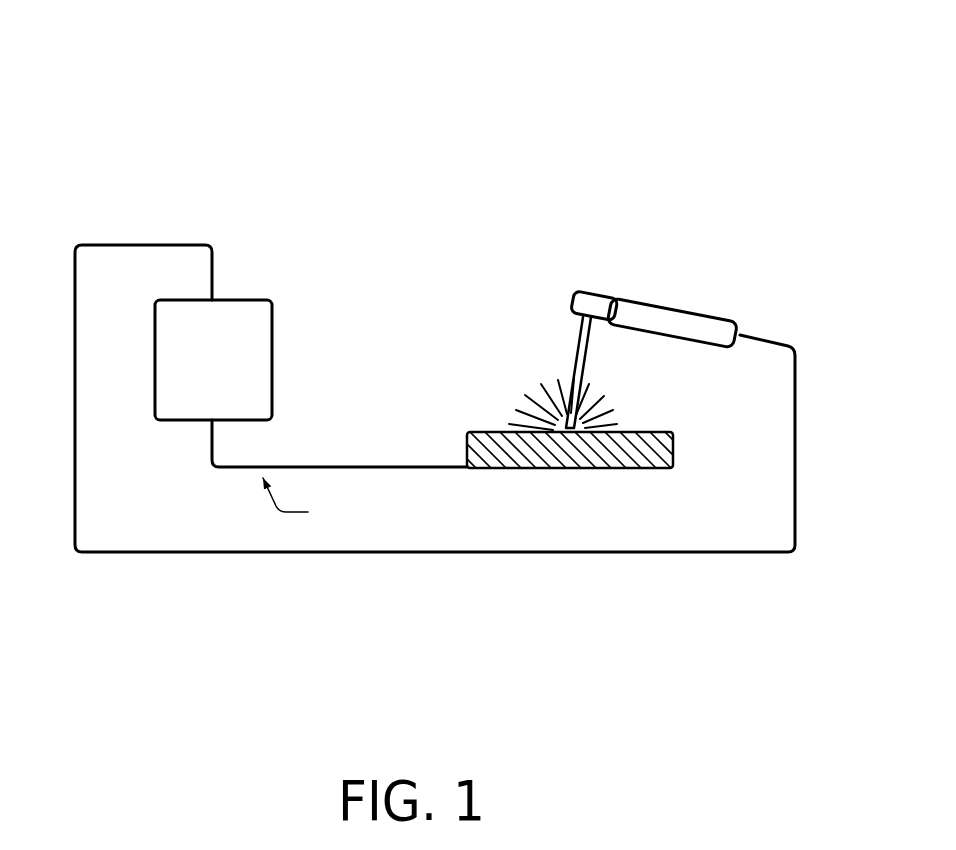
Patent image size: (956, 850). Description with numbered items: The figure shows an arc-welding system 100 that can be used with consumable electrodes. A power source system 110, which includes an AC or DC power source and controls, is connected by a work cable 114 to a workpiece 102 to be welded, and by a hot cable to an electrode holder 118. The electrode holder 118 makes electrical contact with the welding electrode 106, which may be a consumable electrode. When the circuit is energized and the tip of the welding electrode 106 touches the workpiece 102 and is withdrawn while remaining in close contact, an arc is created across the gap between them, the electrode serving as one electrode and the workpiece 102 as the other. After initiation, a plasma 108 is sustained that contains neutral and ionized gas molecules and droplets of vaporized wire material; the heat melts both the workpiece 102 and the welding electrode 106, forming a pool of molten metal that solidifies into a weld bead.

The arc-welding system 100 is at (705, 92).
The workpiece 102 is at (458, 440).
The welding electrode 106 is at (563, 348).
The plasma 108 is at (502, 402).
The power source system 110 is at (318, 152).
The work cable 114 is at (380, 562).
The electrode holder 118 is at (697, 300).